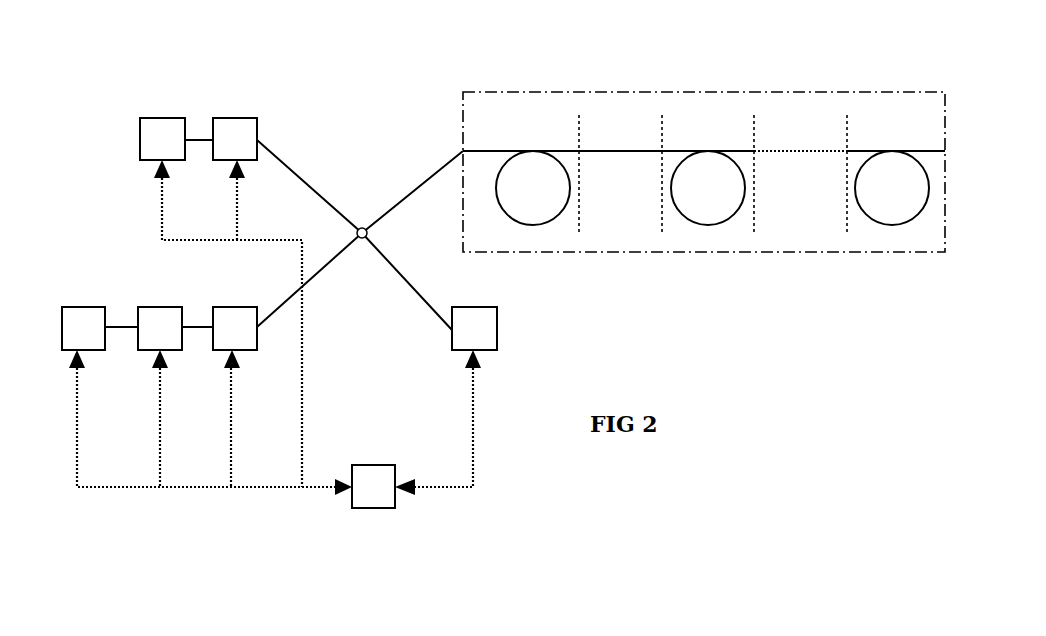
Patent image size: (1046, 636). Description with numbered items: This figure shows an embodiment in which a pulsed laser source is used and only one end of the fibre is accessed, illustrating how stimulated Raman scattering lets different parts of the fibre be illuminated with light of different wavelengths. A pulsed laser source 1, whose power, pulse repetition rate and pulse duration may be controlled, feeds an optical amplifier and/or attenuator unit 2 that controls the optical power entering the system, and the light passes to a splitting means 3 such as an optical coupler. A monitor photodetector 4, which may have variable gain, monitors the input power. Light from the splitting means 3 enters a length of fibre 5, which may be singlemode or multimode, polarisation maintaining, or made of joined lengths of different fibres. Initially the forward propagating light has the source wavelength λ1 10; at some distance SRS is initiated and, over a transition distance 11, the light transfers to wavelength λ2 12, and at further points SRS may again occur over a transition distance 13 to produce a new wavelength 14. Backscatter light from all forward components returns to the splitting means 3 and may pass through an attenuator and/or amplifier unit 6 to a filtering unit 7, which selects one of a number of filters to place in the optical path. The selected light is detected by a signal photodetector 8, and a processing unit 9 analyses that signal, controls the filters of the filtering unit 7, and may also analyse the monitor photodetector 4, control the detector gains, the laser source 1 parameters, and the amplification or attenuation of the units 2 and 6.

The pulsed laser source 1 is at (168, 132).
The optical amplifier and/or attenuator unit 2 is at (232, 137).
The splitting means 3 is at (370, 228).
The photodetector 4 is at (485, 338).
The fibre 5 is at (713, 90).
The attenuator and/or amplifier unit 6 is at (228, 323).
The filtering unit 7 is at (153, 320).
The photodetector 8 is at (87, 335).
The processing unit 9 is at (378, 480).
The wavelength λ1 10 is at (530, 192).
The transition distance 11 is at (623, 112).
The wavelength λ2 12 is at (703, 193).
The transition distance 13 is at (805, 117).
The new wavelength 14 is at (885, 192).